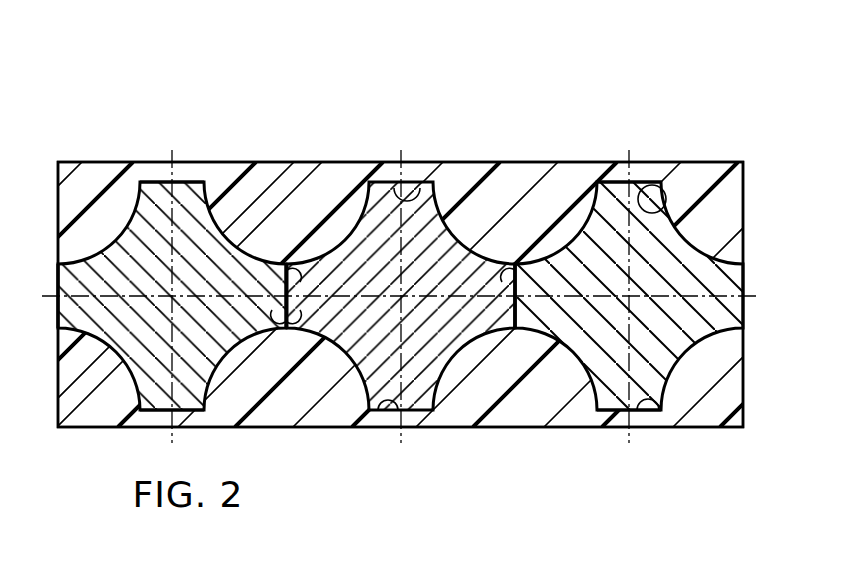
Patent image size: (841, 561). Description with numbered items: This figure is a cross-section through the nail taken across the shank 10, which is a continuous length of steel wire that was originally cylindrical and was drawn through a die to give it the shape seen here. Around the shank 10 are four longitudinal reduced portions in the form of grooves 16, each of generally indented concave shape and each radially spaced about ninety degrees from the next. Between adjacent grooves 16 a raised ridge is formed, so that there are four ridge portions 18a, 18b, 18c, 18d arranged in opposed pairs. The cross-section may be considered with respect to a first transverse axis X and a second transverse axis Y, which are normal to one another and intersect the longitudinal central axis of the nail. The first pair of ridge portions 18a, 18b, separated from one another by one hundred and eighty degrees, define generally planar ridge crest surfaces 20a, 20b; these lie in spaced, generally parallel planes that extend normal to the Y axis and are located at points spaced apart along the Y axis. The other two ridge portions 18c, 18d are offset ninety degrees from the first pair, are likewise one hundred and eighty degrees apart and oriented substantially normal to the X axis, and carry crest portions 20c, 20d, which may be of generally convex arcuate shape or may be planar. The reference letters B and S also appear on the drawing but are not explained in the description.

The shank 10 is at (180, 270).
The grooves 16 is at (87, 237).
The ridge portion 18a is at (548, 262).
The ridge portion 18b is at (514, 258).
The ridge portion 18c is at (399, 185).
The ridge portion 18d is at (388, 412).
The ridge crest surface 20a is at (60, 235).
The ridge crest surface 20b is at (282, 330).
The crest portion 20c is at (173, 183).
The crest portion 20d is at (168, 414).
The band B is at (340, 178).
The structure S is at (491, 132).
The first transverse axis X is at (180, 195).
The second transverse axis Y is at (50, 298).